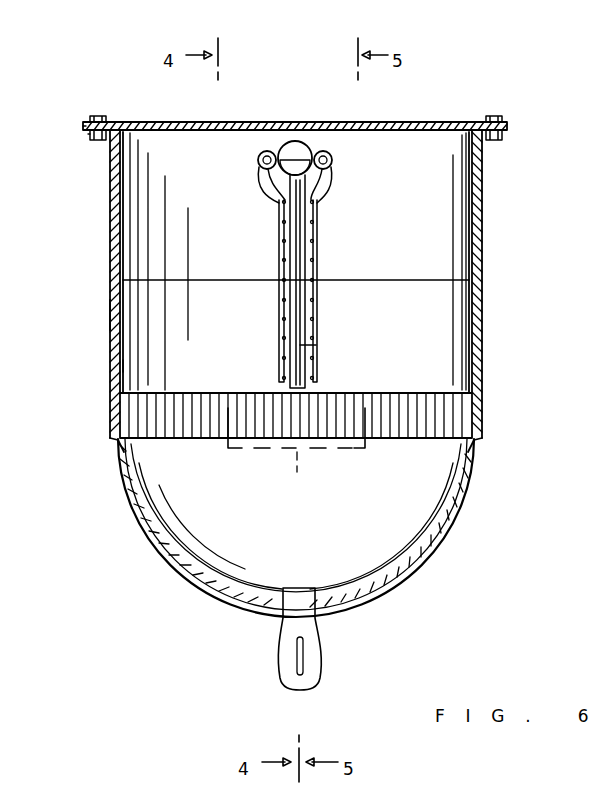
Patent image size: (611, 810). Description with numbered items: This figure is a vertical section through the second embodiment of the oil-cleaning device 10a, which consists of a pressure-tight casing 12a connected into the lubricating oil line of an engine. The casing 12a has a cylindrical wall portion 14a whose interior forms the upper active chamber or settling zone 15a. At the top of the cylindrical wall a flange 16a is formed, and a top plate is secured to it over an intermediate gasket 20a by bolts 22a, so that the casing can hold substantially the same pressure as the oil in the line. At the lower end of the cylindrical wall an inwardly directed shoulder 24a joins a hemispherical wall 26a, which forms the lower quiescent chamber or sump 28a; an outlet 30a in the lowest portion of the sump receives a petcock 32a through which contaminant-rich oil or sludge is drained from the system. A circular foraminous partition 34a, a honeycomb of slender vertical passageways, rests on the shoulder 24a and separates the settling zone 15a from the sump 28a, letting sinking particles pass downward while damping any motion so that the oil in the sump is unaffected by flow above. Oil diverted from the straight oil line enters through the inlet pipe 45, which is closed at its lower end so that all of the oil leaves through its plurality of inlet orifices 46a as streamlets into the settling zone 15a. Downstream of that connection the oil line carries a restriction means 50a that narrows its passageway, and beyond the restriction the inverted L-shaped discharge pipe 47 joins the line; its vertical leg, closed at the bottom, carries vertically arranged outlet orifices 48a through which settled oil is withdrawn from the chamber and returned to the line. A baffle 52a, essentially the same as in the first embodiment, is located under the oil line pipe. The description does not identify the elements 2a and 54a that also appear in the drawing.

The partially visible numeral (cut off at sheet edge) 2a is at (83, 127).
The device 10a is at (496, 375).
The casing 12a is at (110, 415).
The cylindrical wall portion 14a is at (101, 322).
The upper active chamber 15a is at (424, 193).
The flange 16a is at (90, 140).
The gasket 20a is at (83, 128).
The bolts 22a is at (100, 116).
The inwardly directed shoulder 24a is at (120, 445).
The hemispherical wall 26a is at (424, 562).
The sump 28a is at (176, 545).
The outlet 30a is at (281, 614).
The petcock 32a is at (294, 688).
The foraminous partition 34a is at (207, 441).
The inlet pipe 45 is at (280, 310).
The inlet orifices 46a is at (282, 280).
The discharge pipe 47 is at (318, 303).
The outlet orifices 48a is at (314, 280).
The restriction means 50a is at (294, 142).
The baffle 52a is at (318, 345).
The wall liner 54a is at (125, 366).